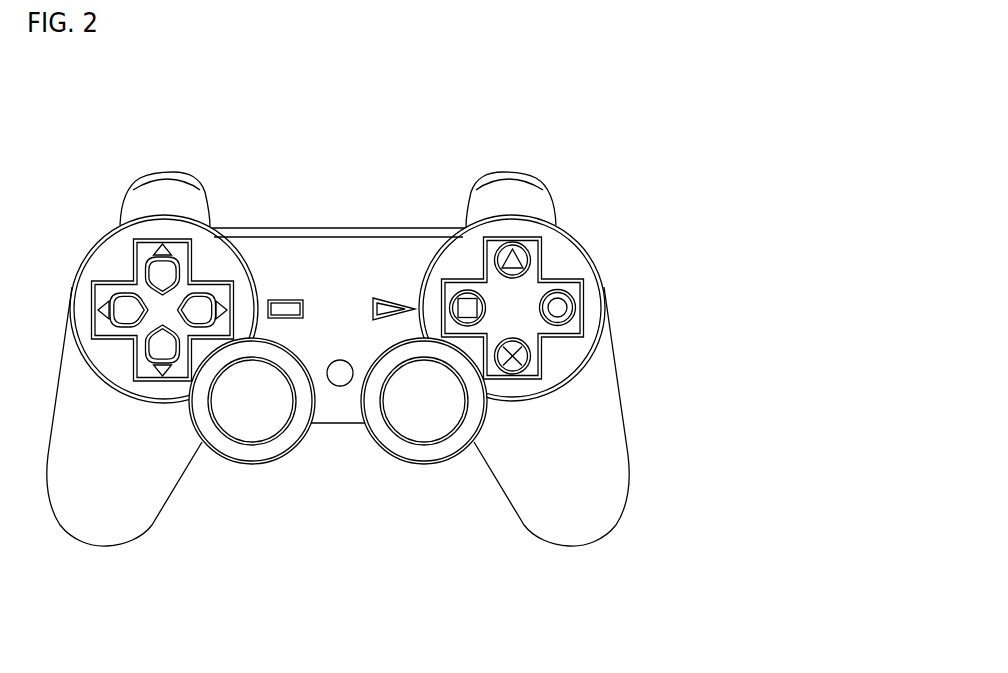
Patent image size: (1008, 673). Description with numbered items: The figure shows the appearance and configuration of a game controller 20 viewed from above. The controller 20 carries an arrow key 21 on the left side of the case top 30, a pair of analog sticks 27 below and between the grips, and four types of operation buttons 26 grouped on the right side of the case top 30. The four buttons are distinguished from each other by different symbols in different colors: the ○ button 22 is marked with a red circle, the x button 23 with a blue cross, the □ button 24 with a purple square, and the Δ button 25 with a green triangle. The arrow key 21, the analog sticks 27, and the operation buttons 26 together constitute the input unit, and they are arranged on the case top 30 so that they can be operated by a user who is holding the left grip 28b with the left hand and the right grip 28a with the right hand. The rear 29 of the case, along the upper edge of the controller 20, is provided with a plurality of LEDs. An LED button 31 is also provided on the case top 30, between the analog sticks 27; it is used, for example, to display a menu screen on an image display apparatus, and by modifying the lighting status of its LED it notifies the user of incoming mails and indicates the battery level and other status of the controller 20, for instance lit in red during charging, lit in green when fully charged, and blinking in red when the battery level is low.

The controller 20 is at (665, 93).
The arrow key 21 is at (107, 292).
The ○ button 22 is at (568, 295).
The x button 23 is at (525, 355).
The □ button 24 is at (487, 310).
The Δ button 25 is at (528, 253).
The operation buttons 26 is at (693, 210).
The analog sticks 27 is at (263, 420).
The right grip 28a is at (582, 512).
The left grip 28b is at (103, 518).
The rear of the case 29 is at (340, 228).
The case top 30 is at (308, 262).
The LED button 31 is at (340, 386).